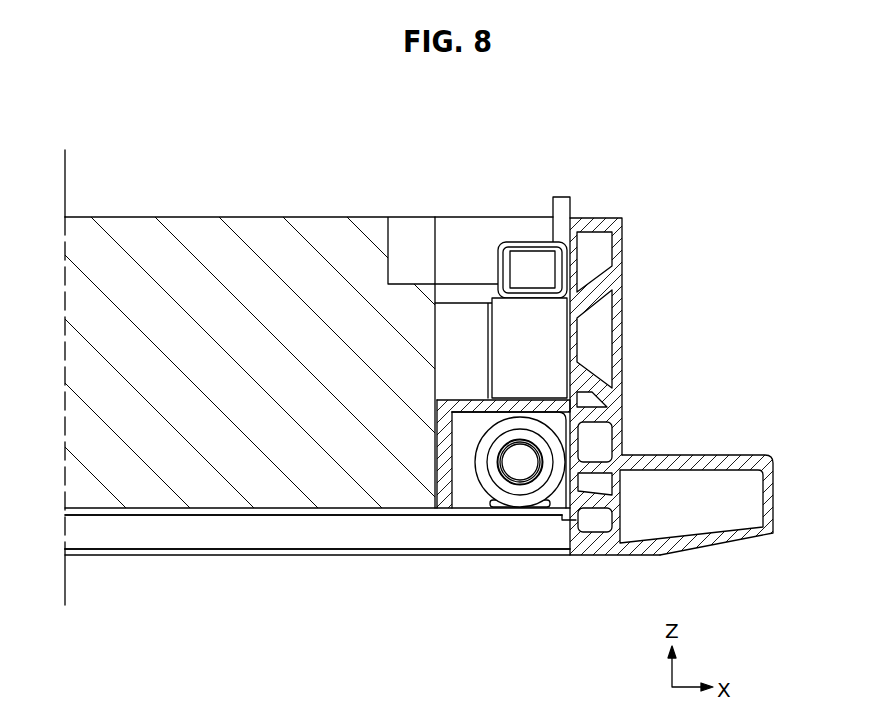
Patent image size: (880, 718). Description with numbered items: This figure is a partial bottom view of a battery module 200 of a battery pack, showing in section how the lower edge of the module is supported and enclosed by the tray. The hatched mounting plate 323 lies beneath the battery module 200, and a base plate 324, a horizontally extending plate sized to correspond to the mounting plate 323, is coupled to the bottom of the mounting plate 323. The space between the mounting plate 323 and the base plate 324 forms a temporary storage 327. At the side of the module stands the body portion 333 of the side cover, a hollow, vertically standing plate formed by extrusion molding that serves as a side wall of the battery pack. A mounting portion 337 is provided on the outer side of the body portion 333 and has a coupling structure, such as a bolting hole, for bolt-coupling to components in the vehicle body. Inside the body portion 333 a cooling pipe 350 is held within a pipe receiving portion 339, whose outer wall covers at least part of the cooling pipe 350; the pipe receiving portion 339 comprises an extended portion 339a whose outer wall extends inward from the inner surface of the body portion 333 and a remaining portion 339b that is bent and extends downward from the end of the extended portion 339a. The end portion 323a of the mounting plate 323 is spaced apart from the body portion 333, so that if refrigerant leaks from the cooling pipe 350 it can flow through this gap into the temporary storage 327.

The battery module 200 is at (265, 159).
The body portion 333 is at (618, 283).
The cooling pipe 350 is at (548, 437).
The mounting portion 337 is at (773, 498).
The mounting plate 323 is at (160, 513).
The base plate 324 is at (217, 550).
The temporary storage 327 is at (279, 526).
The pipe receiving portion 339 is at (534, 393).
The extended portion 339a is at (475, 407).
The remaining portion 339b is at (447, 473).
The end portion 323a is at (562, 513).